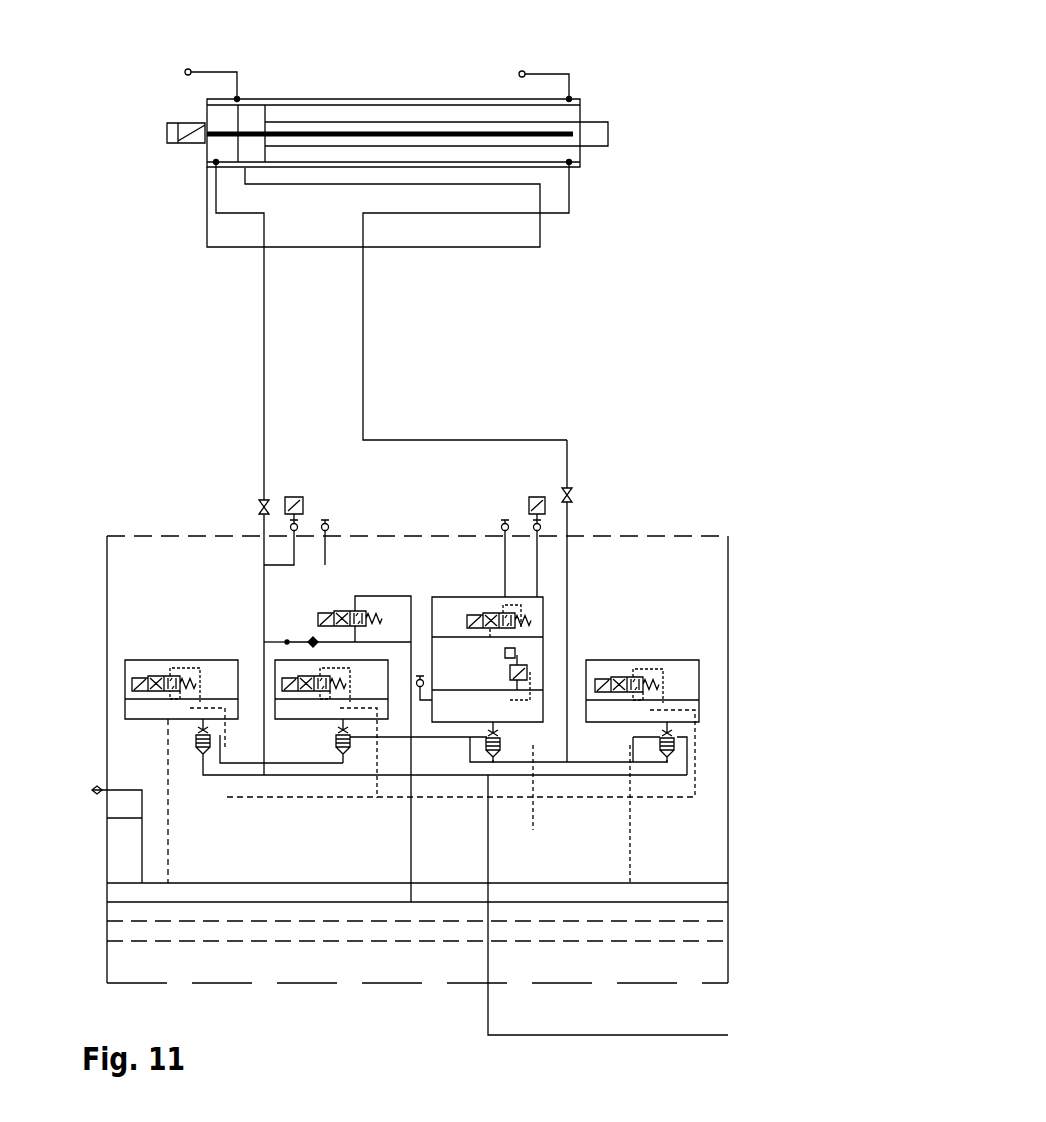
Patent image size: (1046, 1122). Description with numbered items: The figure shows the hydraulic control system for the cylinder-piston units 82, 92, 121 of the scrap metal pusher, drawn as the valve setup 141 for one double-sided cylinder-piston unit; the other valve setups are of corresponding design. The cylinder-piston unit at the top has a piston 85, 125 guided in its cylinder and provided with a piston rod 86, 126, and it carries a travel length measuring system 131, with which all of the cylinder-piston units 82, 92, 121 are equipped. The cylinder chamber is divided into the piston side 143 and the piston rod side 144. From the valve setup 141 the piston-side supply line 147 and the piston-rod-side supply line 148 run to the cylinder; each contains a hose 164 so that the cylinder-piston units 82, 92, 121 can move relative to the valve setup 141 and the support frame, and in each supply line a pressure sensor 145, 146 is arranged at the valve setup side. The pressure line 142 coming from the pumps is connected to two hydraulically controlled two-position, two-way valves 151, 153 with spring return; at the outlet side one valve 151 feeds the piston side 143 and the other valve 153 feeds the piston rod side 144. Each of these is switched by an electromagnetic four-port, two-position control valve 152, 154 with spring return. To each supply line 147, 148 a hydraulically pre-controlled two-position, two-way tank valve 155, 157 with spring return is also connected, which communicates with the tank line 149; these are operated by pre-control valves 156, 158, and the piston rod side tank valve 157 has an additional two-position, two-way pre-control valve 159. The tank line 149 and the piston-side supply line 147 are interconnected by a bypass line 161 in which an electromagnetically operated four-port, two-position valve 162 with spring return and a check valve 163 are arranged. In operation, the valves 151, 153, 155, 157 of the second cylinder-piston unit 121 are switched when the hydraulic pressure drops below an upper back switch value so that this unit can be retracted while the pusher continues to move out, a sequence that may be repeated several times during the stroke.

The travel length measuring system 131 is at (173, 133).
The piston side 143 is at (222, 116).
The piston 85 is at (301, 83).
The piston 125 is at (251, 120).
The piston rod 86 is at (407, 75).
The piston rod 126 is at (415, 126).
The cylinder-piston unit 82 is at (404, 126).
The cylinder-piston unit 92 is at (404, 126).
The cylinder-piston unit 121 is at (499, 106).
The piston rod side 144 is at (572, 113).
The supply line 147 is at (264, 428).
The hose 164 is at (363, 373).
The supply line 148 is at (567, 453).
The pressure sensor 145 is at (291, 505).
The pressure sensor 146 is at (548, 509).
The valve setup 141 is at (587, 596).
The 4/2 way valve 162 is at (333, 611).
The check valve 163 is at (313, 642).
The bypass line 161 is at (287, 641).
The pre-control valve 156 is at (292, 685).
The control valve 152 is at (148, 691).
The 2/2-way valve 151 is at (200, 725).
The valve 155 is at (323, 727).
The pre-control valve 158 is at (515, 626).
The 2/2 pre-control valve 159 is at (530, 668).
The control valve 154 is at (630, 682).
The 2/2-way valve 153 is at (687, 740).
The piston rod side tank valve 157 is at (503, 730).
The tank line 149 is at (672, 902).
The pressure line 142 is at (658, 1035).